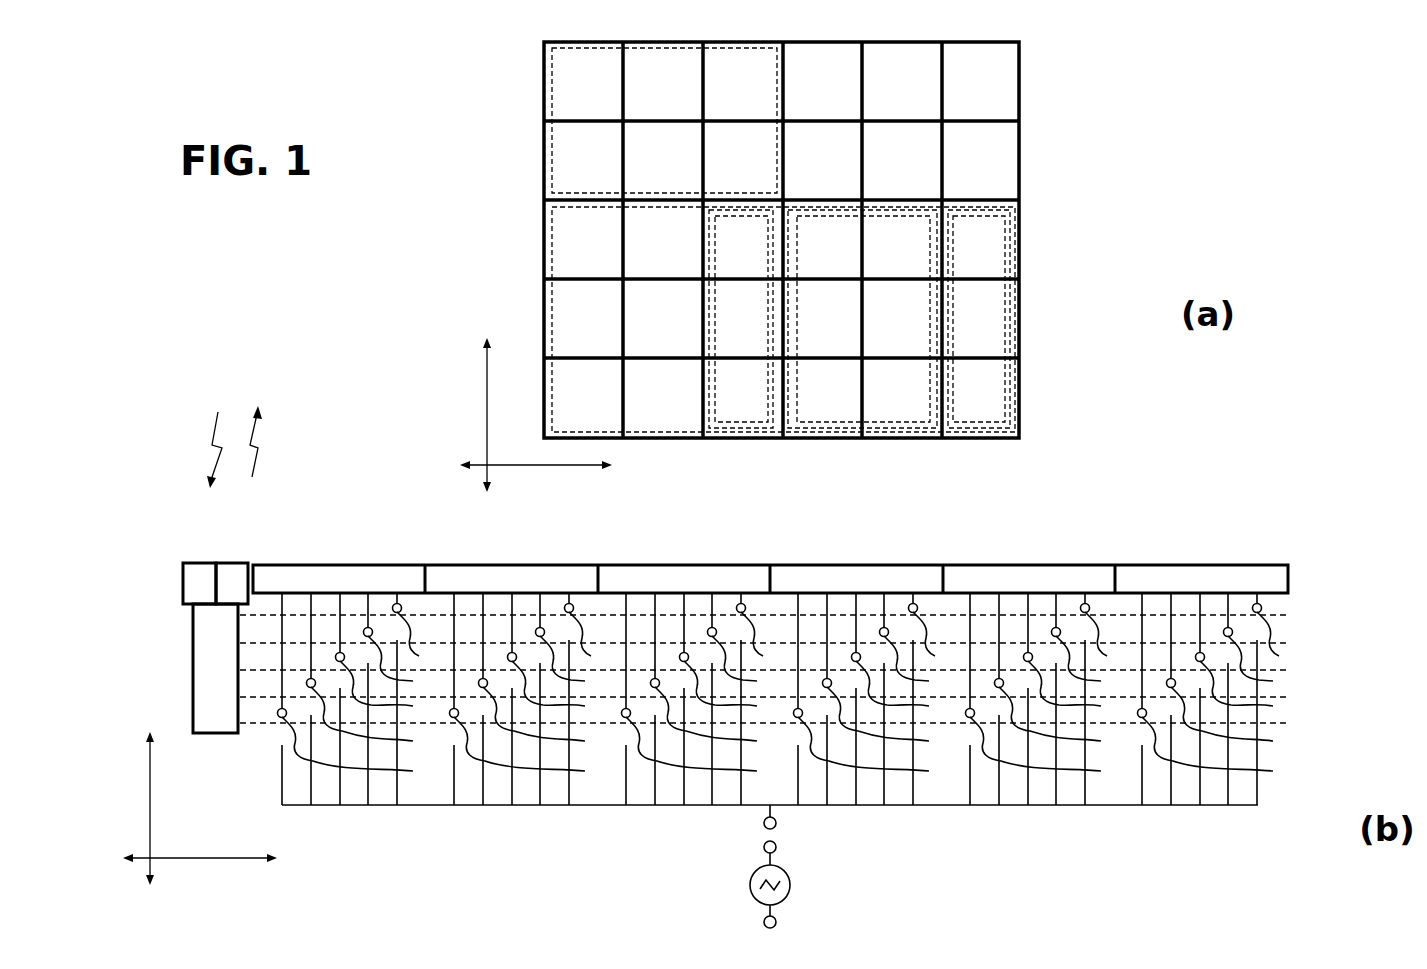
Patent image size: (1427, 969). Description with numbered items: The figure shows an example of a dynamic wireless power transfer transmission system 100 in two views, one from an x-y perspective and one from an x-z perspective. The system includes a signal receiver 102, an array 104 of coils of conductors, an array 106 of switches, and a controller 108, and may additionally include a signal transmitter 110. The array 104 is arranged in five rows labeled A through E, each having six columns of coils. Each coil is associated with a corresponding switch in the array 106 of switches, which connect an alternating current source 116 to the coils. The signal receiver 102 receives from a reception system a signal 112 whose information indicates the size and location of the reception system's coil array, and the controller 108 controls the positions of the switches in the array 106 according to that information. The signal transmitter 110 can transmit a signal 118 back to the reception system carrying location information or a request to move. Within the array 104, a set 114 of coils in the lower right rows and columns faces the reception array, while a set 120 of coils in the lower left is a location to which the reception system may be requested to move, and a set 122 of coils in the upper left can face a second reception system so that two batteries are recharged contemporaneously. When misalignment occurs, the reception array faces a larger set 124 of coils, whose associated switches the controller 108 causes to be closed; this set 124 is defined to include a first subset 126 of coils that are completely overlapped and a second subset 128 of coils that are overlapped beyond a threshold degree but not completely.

The dynamic wireless power transfer transmission system 100 is at (1190, 39).
The signal receiver 102 is at (198, 572).
The array of coils of conductors 104 is at (1118, 144).
The array of switches 106 is at (1322, 597).
The controller 108 is at (217, 718).
The signal transmitter 110 is at (230, 572).
The signal 112 is at (213, 439).
The set of coils of conductors 114 is at (1000, 440).
The alternating current source 116 is at (788, 873).
The signal 118 is at (262, 430).
The set of coils of conductors 120 is at (662, 433).
The set of coils of conductors 122 is at (540, 93).
The set of coils of conductors 124 is at (912, 433).
The first subset of coils of conductors 126 is at (840, 433).
The second subset of coils of conductors 128 is at (747, 440).